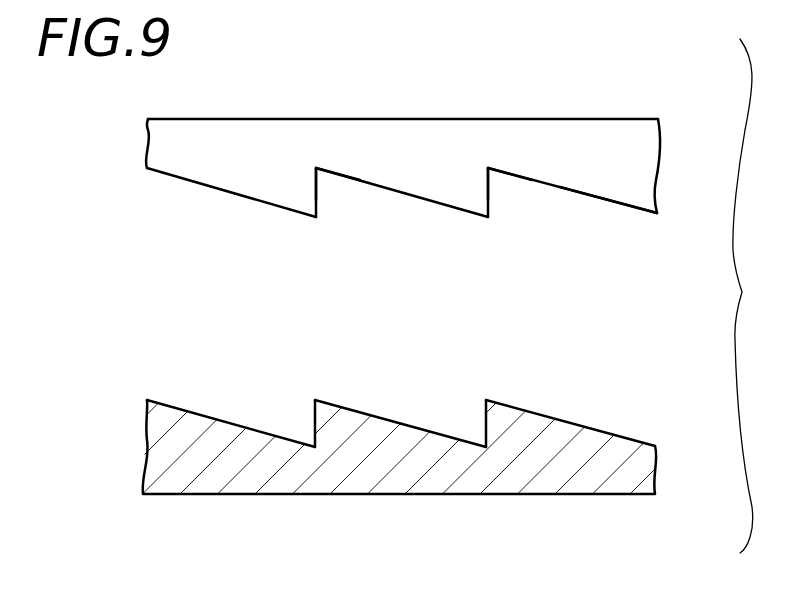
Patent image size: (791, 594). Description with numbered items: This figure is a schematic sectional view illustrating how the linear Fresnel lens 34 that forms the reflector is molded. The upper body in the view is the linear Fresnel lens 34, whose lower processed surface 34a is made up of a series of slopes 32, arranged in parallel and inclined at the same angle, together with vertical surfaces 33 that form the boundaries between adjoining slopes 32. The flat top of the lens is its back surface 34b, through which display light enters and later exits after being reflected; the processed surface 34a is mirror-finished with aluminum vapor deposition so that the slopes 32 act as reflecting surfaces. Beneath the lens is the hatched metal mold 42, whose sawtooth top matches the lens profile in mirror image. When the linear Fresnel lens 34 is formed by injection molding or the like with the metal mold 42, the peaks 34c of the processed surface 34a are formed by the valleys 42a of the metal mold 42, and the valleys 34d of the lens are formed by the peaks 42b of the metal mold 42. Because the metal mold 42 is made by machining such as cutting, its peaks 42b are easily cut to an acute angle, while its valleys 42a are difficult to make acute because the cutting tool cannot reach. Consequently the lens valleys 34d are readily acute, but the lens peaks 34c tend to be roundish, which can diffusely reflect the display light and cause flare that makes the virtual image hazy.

The linear Fresnel lens 34 is at (417, 167).
The processed surface 34a is at (617, 211).
The back surface 34b is at (603, 118).
The peaks 34c is at (317, 219).
The valleys 34d is at (318, 170).
The vertical surfaces 33 is at (318, 195).
The slopes 32 is at (242, 196).
The metal mold 42 is at (409, 454).
The valleys 42a is at (313, 444).
The peaks 42b is at (315, 399).